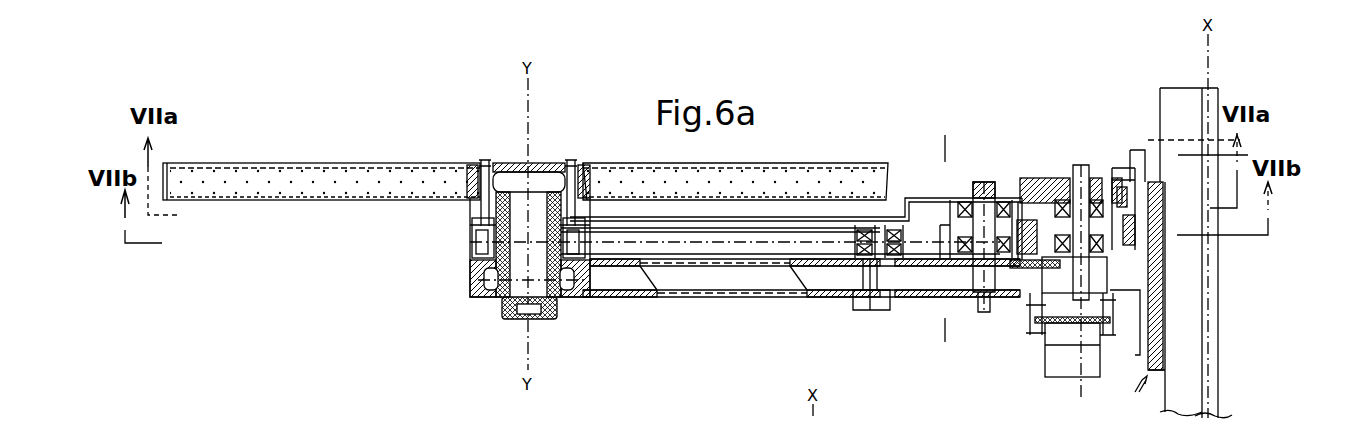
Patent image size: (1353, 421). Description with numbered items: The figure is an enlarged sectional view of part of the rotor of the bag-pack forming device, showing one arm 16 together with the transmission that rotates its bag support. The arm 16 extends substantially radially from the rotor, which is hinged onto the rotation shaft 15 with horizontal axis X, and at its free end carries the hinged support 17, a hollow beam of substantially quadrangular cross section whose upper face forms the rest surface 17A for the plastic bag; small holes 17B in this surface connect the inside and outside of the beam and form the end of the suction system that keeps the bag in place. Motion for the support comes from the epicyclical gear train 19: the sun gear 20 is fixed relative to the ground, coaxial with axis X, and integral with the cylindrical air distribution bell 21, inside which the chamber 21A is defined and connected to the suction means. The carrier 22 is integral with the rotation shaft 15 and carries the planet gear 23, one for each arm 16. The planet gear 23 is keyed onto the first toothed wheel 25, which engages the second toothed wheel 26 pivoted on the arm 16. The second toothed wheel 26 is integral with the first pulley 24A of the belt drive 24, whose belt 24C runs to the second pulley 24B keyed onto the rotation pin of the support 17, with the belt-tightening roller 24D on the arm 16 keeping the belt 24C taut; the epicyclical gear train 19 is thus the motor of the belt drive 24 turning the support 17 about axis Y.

The rotation shaft 15 is at (1195, 334).
The arm 16 is at (630, 298).
The support 17 is at (610, 166).
The rest surface 17A is at (308, 182).
The small holes 17B is at (415, 178).
The epicyclical gear train 19 is at (1134, 138).
The sun gear 20 is at (1163, 275).
The air distribution bell 21 is at (1132, 330).
The chamber 21A is at (1034, 318).
The carrier 22 is at (1050, 185).
The planet gear 23 is at (1040, 268).
The belt drive 24 is at (751, 270).
The first pulley 24A is at (945, 266).
The second pulley 24B is at (490, 251).
The belt 24C is at (780, 250).
The belt-tightening roller 24D is at (893, 225).
The first toothed wheel 25 is at (1115, 190).
The second toothed wheel 26 is at (1012, 202).